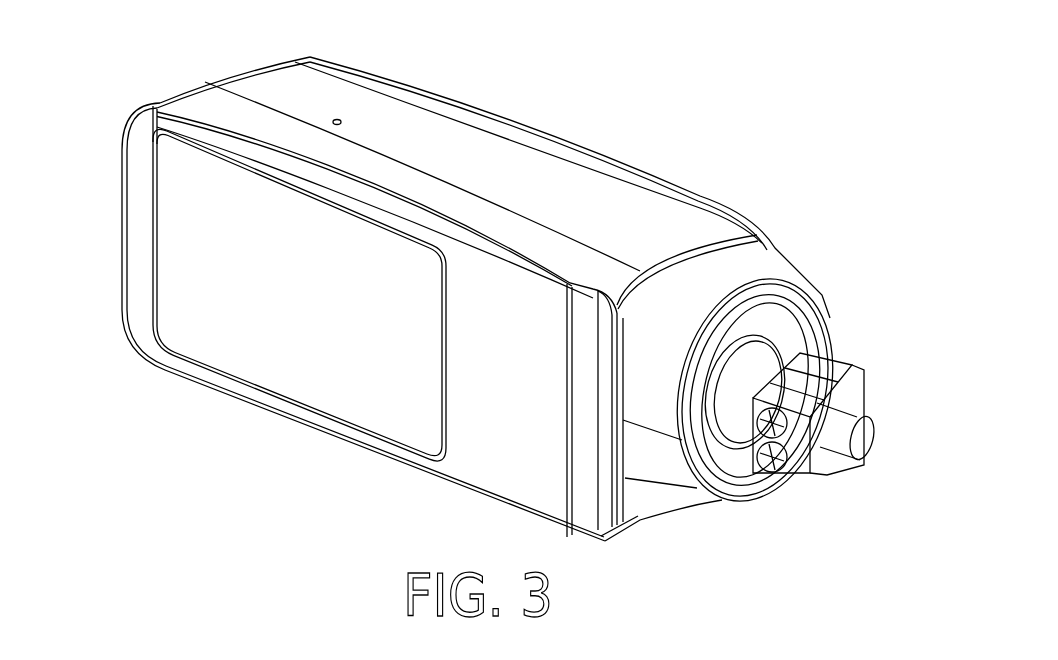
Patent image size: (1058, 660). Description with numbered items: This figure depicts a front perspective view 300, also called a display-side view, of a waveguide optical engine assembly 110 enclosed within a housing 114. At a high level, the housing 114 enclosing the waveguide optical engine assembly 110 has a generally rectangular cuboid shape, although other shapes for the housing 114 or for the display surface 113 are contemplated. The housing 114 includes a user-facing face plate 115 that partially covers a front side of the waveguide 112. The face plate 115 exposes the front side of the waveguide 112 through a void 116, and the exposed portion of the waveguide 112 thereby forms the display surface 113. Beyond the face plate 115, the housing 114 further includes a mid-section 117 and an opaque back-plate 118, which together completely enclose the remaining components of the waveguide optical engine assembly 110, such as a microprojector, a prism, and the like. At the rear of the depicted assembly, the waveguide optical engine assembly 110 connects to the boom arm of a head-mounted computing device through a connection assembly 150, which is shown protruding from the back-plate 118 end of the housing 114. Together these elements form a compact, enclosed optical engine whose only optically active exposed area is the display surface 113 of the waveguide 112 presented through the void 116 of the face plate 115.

The front perspective view 300 is at (832, 47).
The waveguide optical engine assembly 110 is at (85, 93).
The waveguide 112 is at (250, 343).
The display surface 113 is at (317, 304).
The housing 114 is at (215, 68).
The face plate 115 is at (604, 545).
The void 116 is at (152, 232).
The mid-section 117 is at (663, 228).
The opaque back-plate 118 is at (668, 175).
The connection assembly 150 is at (879, 403).